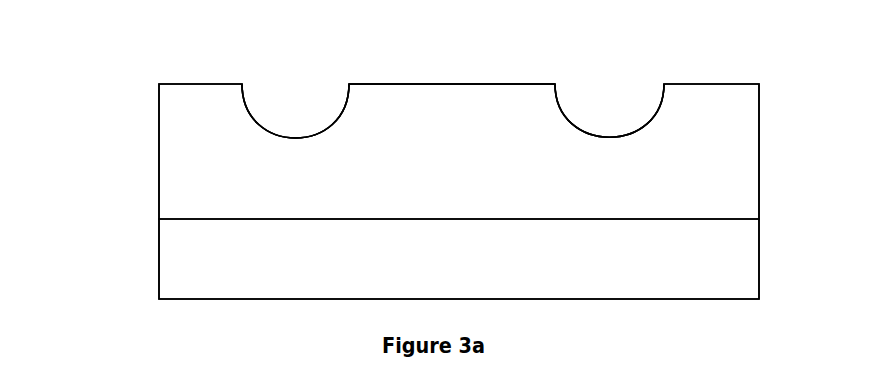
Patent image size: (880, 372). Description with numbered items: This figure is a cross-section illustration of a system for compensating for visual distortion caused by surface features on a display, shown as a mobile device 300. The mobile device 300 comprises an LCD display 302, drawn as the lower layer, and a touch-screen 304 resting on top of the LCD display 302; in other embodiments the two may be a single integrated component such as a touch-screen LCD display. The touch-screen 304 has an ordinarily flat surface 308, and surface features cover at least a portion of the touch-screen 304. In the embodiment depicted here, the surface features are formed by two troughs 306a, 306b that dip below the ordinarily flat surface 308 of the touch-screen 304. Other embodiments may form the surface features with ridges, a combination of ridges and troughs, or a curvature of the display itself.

The mobile device 300 is at (728, 84).
The LCD display 302 is at (159, 275).
The touch-screen 304 is at (159, 193).
The trough 306a is at (243, 98).
The trough 306b is at (556, 103).
The ordinarily flat surface 308 is at (378, 83).